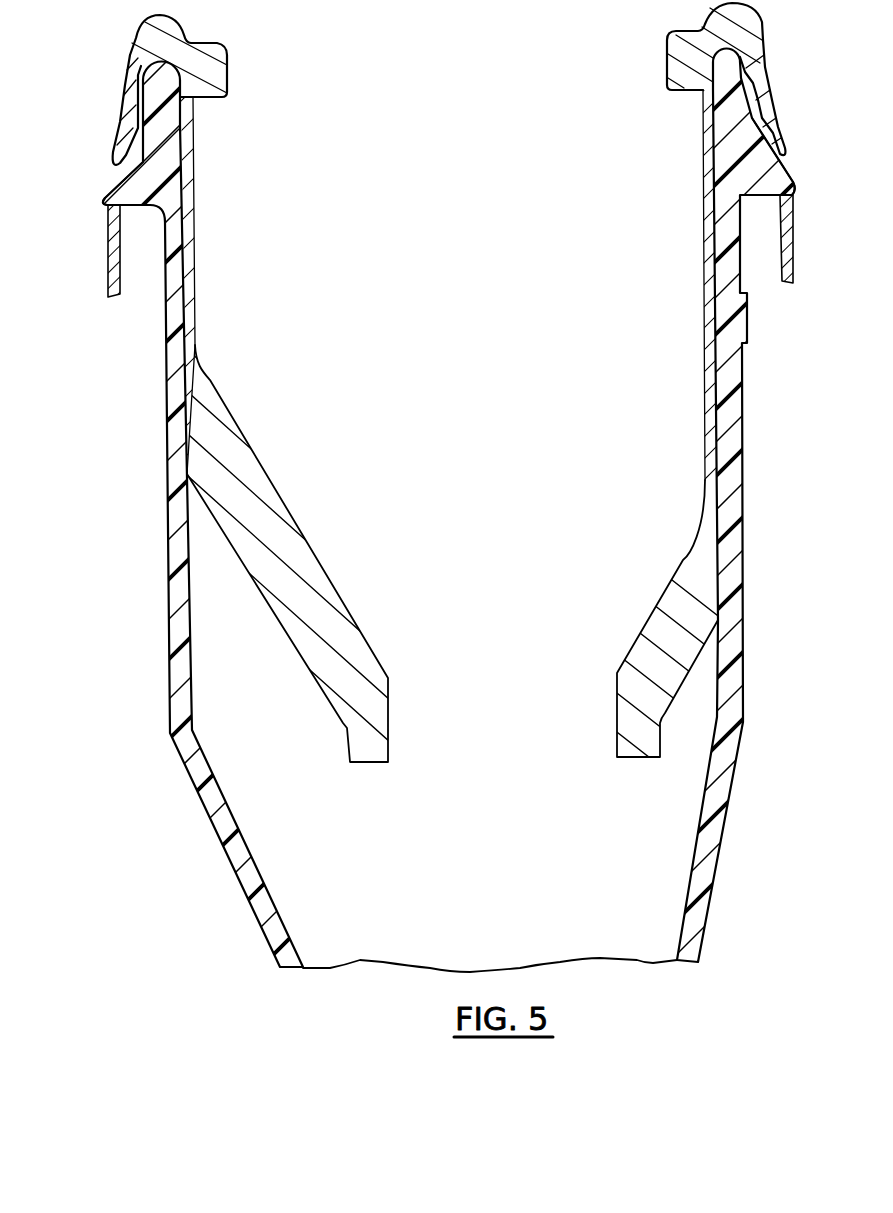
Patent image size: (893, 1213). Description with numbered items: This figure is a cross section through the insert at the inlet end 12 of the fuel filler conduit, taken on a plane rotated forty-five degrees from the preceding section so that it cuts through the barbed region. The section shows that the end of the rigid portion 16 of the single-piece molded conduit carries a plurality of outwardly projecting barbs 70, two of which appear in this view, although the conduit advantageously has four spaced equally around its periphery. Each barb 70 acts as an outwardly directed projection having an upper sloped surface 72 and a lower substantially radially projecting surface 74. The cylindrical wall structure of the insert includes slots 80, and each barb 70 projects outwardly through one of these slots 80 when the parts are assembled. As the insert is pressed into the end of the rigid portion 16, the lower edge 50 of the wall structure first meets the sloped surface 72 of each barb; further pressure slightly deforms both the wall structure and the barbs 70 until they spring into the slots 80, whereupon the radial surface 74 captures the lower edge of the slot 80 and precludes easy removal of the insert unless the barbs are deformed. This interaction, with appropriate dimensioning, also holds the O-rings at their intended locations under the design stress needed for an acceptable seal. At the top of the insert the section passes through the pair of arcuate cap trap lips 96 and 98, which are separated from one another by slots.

The inlet end 12 is at (118, 466).
The rigid portion 16 is at (263, 917).
The lower edge 50 is at (114, 300).
The barb 70 is at (102, 200).
The upper sloped surface 72 is at (112, 188).
The lower radially projecting surface 74 is at (135, 206).
The slot 80 is at (114, 165).
The cap trap lip 96 is at (228, 100).
The cap trap lip 98 is at (678, 90).